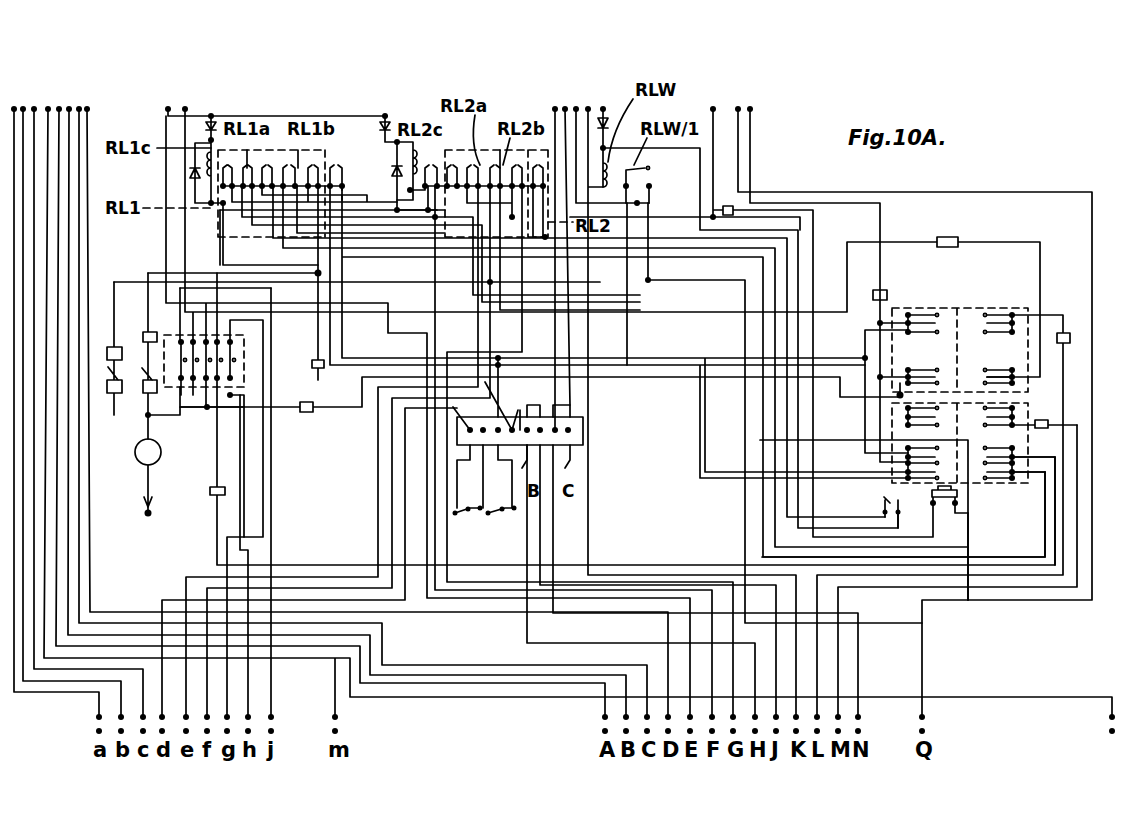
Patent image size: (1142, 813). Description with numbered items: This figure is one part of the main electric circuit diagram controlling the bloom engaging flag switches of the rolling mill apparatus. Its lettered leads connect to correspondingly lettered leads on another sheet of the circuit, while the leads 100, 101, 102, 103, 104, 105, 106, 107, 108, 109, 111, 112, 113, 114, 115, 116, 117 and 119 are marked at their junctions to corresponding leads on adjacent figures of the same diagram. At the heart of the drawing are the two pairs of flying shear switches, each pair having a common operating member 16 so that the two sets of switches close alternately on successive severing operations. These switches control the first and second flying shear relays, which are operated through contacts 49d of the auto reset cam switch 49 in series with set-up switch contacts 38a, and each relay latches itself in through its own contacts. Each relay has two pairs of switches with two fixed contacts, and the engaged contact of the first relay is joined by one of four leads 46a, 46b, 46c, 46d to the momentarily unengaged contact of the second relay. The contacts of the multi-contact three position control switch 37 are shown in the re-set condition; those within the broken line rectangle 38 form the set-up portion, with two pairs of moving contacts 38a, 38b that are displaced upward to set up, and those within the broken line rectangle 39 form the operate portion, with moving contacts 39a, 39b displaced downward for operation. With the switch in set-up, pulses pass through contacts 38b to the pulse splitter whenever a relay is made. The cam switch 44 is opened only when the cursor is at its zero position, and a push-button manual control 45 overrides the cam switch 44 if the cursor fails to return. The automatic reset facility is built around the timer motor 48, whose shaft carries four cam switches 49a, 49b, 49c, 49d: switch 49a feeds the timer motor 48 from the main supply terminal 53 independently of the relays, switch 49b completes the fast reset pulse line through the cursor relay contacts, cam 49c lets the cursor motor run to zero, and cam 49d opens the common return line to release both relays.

The lead 100 is at (14, 107).
The lead 101 is at (23, 107).
The lead 102 is at (34, 107).
The lead 103 is at (48, 107).
The lead 104 is at (59, 107).
The lead 105 is at (69, 108).
The lead 106 is at (79, 108).
The lead 107 is at (88, 110).
The lead 108 is at (168, 107).
The lead 109 is at (185, 107).
The lead 111 is at (750, 107).
The lead 112 is at (576, 107).
The lead 113 is at (555, 107).
The lead 114 is at (588, 107).
The lead 115 is at (603, 107).
The lead 116 is at (713, 107).
The lead 117 is at (565, 107).
The lead 119 is at (738, 107).
The common operating member 16 is at (500, 508).
The multi-contact three position control switch 37 is at (1035, 398).
The broken line rectangle 38 is at (990, 315).
The moving contacts 38a is at (1005, 370).
The moving contacts 38b is at (940, 325).
The broken line rectangle 39 is at (1030, 483).
The moving contacts 39a is at (1040, 443).
The moving contacts 39b is at (925, 418).
The cam switch 44 is at (885, 497).
The push-button manual control 45 is at (935, 507).
The lead 46a is at (222, 216).
The lead 46b is at (345, 188).
The lead 46c is at (347, 196).
The lead 46d is at (415, 241).
The timer motor 48 is at (141, 463).
The auto reset cam switch 49 is at (250, 352).
The cam operated switch 49a is at (180, 340).
The cam switch 49b is at (200, 382).
The cam 49c is at (195, 338).
The cam 49d is at (228, 382).
The main supply terminal 53 is at (152, 511).